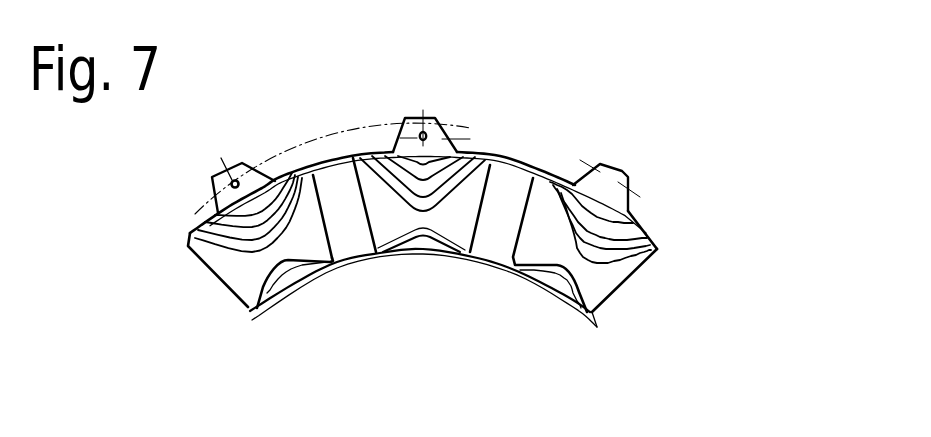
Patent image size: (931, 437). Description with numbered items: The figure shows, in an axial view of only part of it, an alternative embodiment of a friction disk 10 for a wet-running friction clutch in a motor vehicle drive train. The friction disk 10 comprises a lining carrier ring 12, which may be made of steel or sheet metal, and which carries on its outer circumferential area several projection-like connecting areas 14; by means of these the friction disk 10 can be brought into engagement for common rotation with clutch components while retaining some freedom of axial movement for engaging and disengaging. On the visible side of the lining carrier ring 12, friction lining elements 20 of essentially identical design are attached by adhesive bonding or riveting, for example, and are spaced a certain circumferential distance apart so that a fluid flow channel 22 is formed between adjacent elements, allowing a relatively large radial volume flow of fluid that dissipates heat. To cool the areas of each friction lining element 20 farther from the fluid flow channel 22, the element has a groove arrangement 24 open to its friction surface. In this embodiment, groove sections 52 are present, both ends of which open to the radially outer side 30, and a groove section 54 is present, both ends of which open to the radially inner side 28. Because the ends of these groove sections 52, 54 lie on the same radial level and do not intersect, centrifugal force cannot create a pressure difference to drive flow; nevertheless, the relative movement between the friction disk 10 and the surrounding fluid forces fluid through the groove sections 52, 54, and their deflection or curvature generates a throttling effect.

The friction disk 10 is at (718, 133).
The lining carrier ring 12 is at (507, 213).
The connecting areas 14 is at (617, 170).
The friction lining element 20 is at (310, 200).
The fluid flow channel 22 is at (343, 213).
The groove arrangement 24 is at (184, 230).
The radially inner side 28 is at (293, 287).
The radially outer side 30 is at (252, 196).
The groove sections 52 is at (248, 248).
The groove section 54 is at (268, 282).